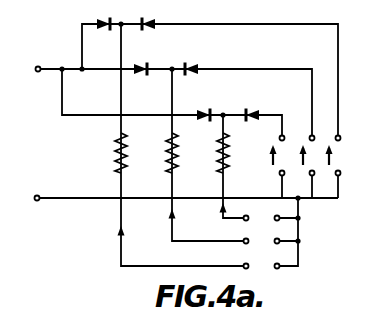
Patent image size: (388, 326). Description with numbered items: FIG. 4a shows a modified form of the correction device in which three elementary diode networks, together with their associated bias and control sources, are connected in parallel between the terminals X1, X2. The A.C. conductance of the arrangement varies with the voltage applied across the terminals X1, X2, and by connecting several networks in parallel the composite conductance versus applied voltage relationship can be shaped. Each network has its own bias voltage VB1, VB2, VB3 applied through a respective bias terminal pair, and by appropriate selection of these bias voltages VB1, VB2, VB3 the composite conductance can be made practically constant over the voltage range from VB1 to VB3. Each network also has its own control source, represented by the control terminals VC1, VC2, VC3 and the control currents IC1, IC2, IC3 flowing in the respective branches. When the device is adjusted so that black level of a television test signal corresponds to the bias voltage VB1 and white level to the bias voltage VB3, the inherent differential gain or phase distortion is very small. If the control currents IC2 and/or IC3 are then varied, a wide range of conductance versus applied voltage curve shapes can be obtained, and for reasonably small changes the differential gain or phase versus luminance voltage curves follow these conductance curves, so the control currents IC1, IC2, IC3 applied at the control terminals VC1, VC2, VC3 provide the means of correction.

The terminal X1 is at (45, 42).
The terminal X2 is at (37, 194).
The bias voltage VB1 is at (271, 145).
The bias voltage VB2 is at (307, 148).
The bias voltage VB3 is at (332, 152).
The output voltage terminal VC1 is at (260, 217).
The output voltage terminal VC2 is at (262, 243).
The output voltage terminal VC3 is at (263, 270).
The output current IC1 is at (221, 206).
The control current IC2 is at (170, 216).
The control current IC3 is at (118, 233).